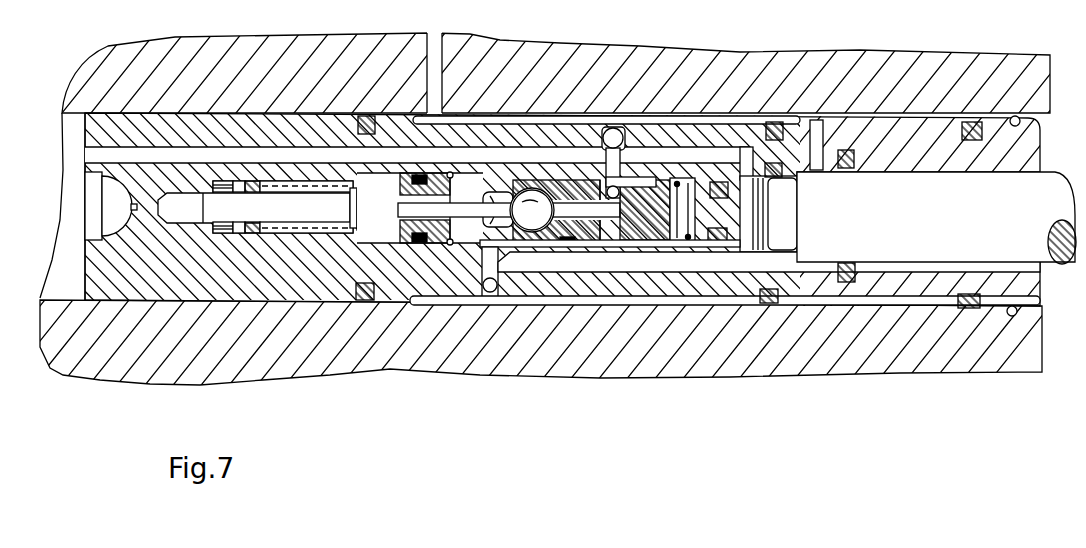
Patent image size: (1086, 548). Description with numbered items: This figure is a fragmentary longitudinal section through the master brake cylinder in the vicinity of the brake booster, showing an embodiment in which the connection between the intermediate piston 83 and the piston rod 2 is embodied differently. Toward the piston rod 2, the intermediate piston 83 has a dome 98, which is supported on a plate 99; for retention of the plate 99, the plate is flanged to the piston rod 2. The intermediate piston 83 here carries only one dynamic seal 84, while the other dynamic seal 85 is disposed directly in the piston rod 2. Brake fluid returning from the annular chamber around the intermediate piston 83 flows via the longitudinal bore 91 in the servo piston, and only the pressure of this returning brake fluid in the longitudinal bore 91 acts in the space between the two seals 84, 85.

The piston rod 2 is at (1055, 184).
The intermediate piston 83 is at (638, 225).
The dynamic seal 84 is at (570, 243).
The dynamic seal 85 is at (718, 248).
The longitudinal bore 91 is at (492, 157).
The dome 98 is at (675, 250).
The plate 99 is at (682, 185).